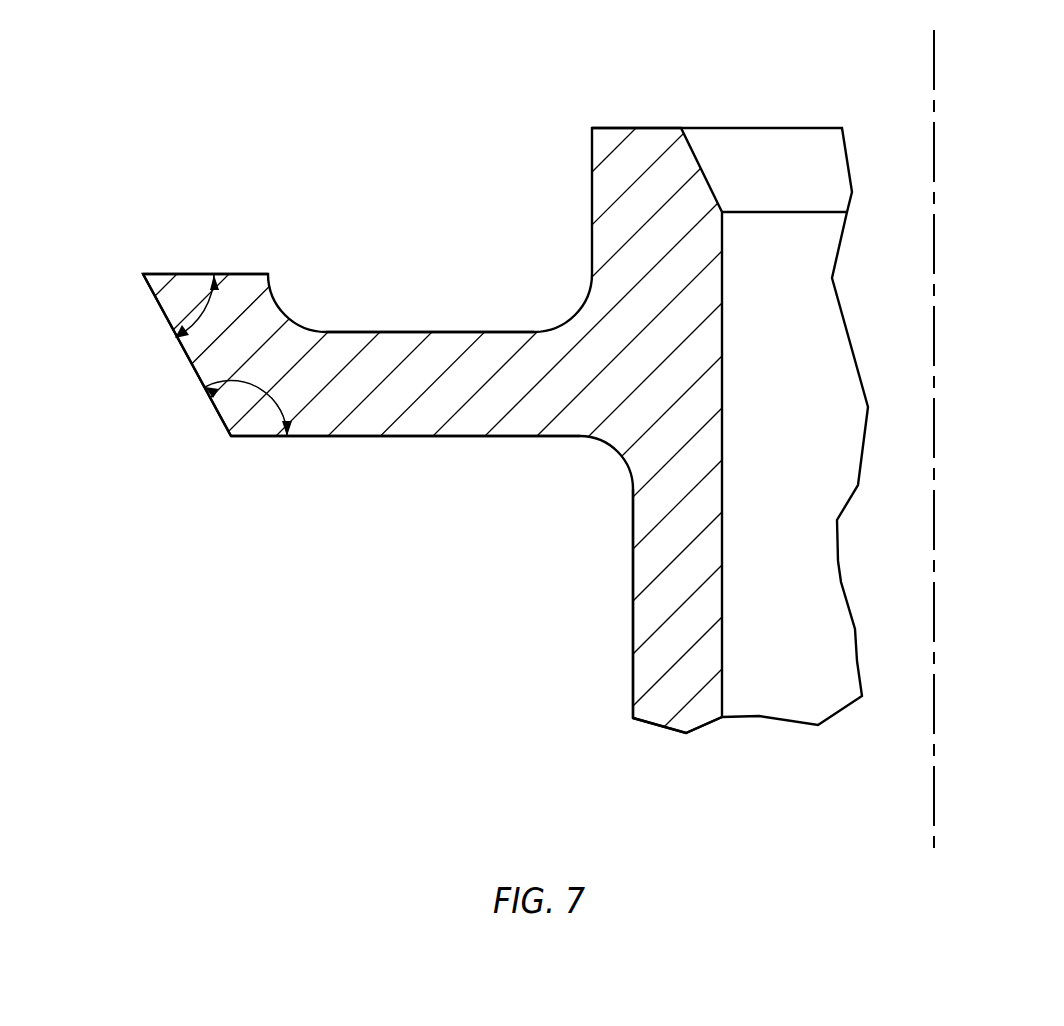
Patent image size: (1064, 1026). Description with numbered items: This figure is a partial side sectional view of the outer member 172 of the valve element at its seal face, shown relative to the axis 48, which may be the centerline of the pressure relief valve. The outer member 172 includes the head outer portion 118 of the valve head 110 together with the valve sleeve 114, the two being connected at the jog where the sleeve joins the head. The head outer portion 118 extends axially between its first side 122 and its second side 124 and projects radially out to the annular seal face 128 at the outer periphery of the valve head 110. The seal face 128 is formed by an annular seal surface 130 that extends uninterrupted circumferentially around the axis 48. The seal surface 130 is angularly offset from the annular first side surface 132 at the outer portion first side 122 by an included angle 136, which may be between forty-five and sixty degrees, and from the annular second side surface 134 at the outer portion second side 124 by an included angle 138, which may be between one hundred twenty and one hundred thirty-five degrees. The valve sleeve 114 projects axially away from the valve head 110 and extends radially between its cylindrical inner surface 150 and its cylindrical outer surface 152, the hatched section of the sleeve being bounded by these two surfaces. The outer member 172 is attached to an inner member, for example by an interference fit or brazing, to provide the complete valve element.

The axis 48 is at (935, 62).
The valve head 110 is at (543, 165).
The valve sleeve 114 is at (670, 746).
The outer portion 118 is at (479, 467).
The first side 122 is at (209, 230).
The first side surface 132 is at (248, 273).
The second side 124 is at (405, 477).
The second side surface 134 is at (375, 437).
The seal face 128 is at (137, 355).
The seal surface 130 is at (191, 362).
The included angle 136 is at (200, 316).
The included angle 138 is at (264, 391).
The inner surface 150 is at (722, 657).
The outer surface 152 is at (633, 638).
The outer member 172 is at (631, 110).